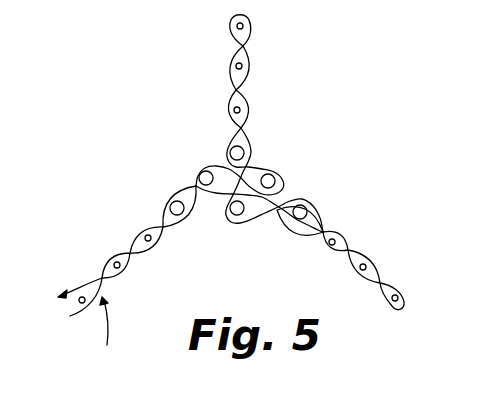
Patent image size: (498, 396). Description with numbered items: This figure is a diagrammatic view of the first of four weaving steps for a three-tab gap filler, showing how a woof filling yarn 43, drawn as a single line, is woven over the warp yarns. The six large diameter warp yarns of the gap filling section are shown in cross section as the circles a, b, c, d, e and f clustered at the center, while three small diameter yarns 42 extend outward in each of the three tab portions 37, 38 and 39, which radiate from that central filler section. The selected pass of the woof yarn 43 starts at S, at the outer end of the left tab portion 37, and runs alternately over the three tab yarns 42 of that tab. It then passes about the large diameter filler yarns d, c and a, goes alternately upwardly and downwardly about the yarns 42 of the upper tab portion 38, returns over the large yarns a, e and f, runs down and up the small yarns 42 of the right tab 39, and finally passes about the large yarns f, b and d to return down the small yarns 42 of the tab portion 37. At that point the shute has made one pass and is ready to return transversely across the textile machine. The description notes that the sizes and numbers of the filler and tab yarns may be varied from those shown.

The left tab portion 37 is at (156, 224).
The tab portion 38 is at (239, 89).
The tab portion 39 is at (350, 249).
The small diameter yarns 42 is at (243, 63).
The woof filling yarn 43 is at (105, 335).
The start of woof yarn pass S is at (76, 304).
The large diameter filler yarn a is at (245, 149).
The large diameter filler yarn b is at (200, 175).
The large diameter filler yarn c is at (274, 176).
The large diameter filler yarn d is at (177, 215).
The large diameter filler yarn e is at (237, 215).
The large diameter filler yarn f is at (298, 219).